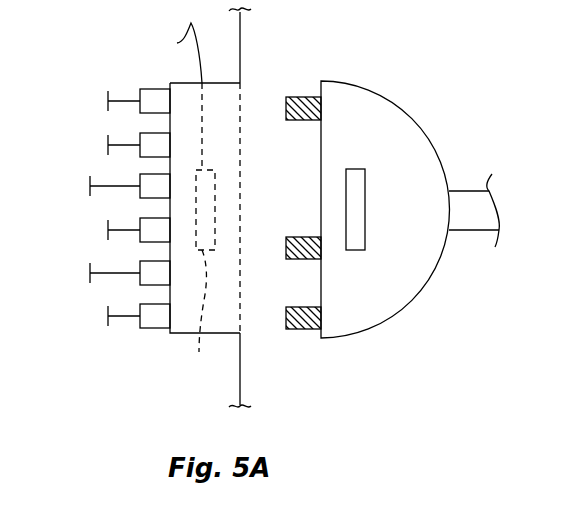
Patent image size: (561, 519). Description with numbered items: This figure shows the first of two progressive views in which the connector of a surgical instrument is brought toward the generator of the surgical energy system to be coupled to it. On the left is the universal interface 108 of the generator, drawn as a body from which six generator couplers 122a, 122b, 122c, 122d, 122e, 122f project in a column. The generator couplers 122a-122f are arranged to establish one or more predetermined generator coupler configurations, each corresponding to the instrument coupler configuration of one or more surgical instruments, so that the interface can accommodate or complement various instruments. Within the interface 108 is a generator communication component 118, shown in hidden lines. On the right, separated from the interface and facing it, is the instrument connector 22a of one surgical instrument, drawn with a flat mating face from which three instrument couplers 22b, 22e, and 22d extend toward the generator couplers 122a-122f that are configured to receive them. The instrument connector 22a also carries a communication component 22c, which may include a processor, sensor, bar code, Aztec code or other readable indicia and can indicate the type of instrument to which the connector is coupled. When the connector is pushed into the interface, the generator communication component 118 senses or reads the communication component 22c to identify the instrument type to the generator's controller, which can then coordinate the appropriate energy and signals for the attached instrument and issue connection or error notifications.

The universal interface 108 is at (177, 83).
The generator communication component 118 is at (202, 232).
The generator coupler 122a is at (140, 314).
The generator coupler 122b is at (140, 271).
The generator coupler 122c is at (140, 228).
The generator coupler 122d is at (140, 184).
The generator coupler 122e is at (140, 143).
The generator coupler 122f is at (140, 99).
The instrument connector 22a is at (358, 84).
The instrument coupler 22b is at (302, 97).
The communication component 22c is at (355, 168).
The instrument coupler 22d is at (285, 248).
The instrument coupler 22e is at (299, 330).